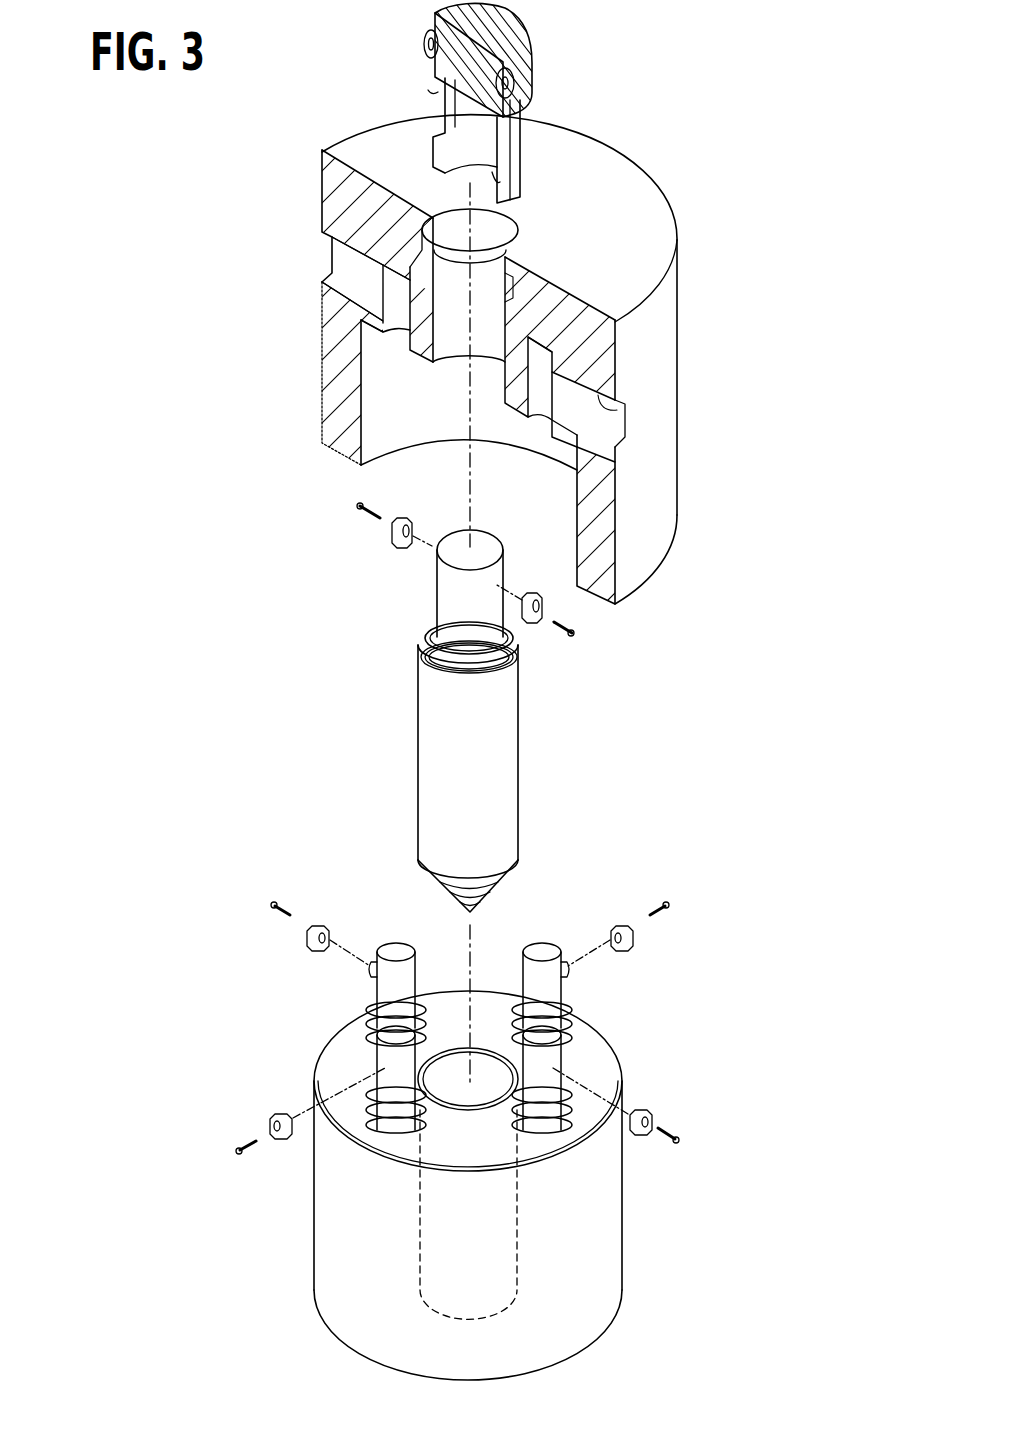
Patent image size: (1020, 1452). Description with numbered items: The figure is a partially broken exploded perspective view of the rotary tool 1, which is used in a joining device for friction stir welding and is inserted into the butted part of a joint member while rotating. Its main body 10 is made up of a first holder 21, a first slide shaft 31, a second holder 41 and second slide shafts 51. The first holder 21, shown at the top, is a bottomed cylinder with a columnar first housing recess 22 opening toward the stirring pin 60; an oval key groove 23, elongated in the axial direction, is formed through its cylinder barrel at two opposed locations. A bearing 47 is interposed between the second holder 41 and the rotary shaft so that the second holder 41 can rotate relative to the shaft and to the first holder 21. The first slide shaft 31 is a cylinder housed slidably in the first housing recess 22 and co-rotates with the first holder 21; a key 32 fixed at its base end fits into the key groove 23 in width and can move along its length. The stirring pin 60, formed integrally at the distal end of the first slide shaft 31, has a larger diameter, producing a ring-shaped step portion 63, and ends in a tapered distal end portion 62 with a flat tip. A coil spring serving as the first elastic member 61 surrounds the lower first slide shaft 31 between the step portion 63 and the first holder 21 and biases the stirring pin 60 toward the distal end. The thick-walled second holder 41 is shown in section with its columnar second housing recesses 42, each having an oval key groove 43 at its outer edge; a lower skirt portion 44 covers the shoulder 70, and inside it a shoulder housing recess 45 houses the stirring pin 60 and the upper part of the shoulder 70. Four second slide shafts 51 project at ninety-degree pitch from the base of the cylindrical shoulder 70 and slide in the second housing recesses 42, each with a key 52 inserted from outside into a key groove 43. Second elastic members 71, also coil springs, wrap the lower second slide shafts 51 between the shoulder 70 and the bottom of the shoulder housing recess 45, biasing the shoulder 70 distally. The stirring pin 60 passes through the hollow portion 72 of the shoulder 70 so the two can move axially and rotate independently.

The rotary tool 1 is at (737, 129).
The main body 10 is at (250, 304).
The first holder 21 is at (533, 22).
The first housing recess 22 is at (515, 78).
The key groove 23 is at (432, 90).
The bearing 47 is at (426, 38).
The first slide shaft 31 is at (445, 588).
The key 32 is at (400, 518).
The second holder 41 is at (348, 148).
The second housing recess 42 is at (398, 262).
The key groove 43 is at (330, 262).
The skirt portion 44 is at (592, 554).
The shoulder housing recess 45 is at (362, 330).
The second slide shaft 51 is at (397, 942).
The key 52 is at (307, 935).
The stirring pin 60 is at (445, 756).
The first elastic member 61 is at (425, 615).
The distal end portion 62 is at (494, 900).
The step portion 63 is at (513, 648).
The shoulder 70 is at (353, 1280).
The second elastic member 71 is at (368, 1008).
The hollow portion 72 is at (517, 1228).